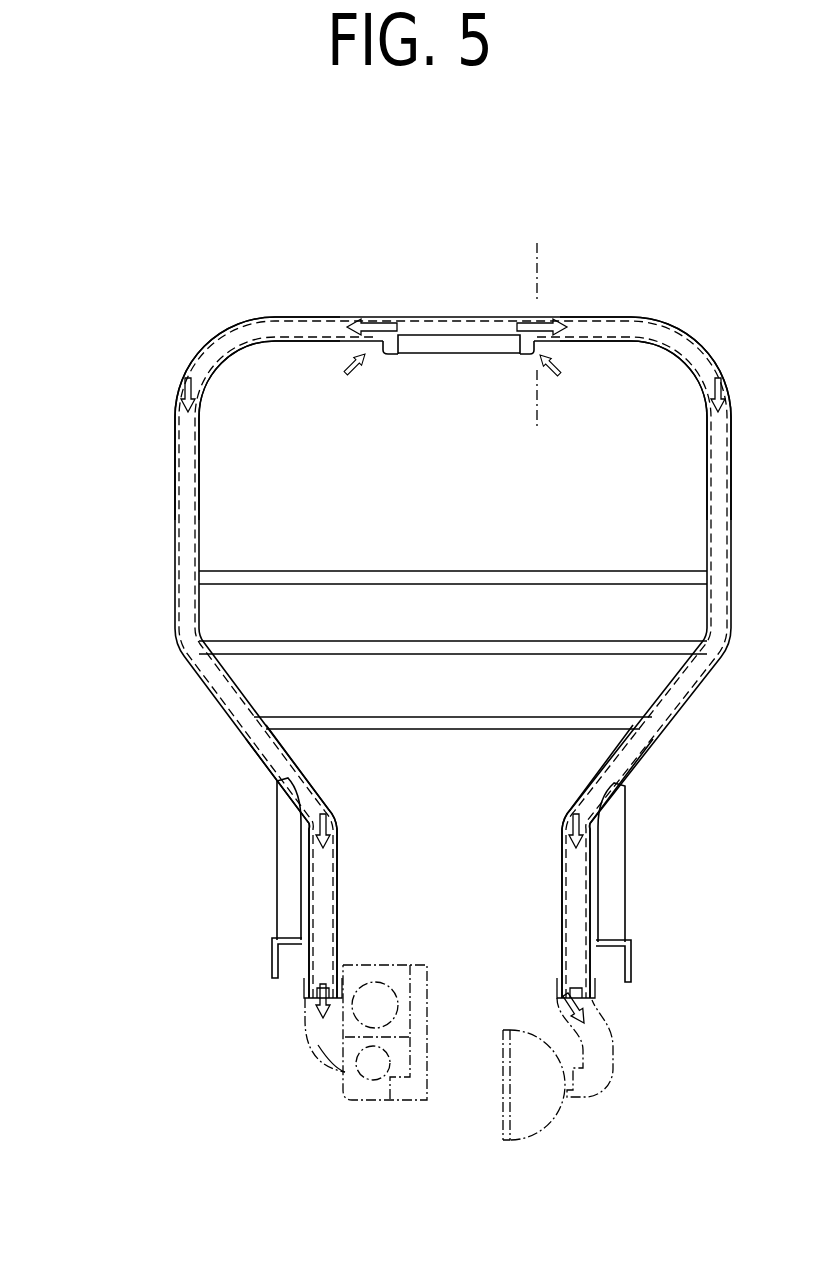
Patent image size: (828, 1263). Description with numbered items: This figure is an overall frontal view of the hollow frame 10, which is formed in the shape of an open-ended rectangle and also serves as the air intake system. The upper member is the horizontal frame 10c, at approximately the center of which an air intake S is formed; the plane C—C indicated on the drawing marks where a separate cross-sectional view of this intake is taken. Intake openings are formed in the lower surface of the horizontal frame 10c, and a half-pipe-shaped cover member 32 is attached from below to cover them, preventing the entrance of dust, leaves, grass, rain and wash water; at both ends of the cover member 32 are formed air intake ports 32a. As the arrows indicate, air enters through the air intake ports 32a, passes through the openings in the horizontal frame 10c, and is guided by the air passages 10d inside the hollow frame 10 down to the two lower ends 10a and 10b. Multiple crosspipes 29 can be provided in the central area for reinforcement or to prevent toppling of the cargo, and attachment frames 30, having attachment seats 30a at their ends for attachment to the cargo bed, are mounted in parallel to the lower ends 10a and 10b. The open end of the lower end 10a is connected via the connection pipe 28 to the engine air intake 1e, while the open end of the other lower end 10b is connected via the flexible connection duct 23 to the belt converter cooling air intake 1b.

The hollow frame 10 is at (432, 318).
The lower end of the hollow frame 10a is at (321, 812).
The lower end of the hollow frame 10b is at (577, 815).
The horizontal frame 10c is at (609, 320).
The air passages 10d is at (272, 330).
The flexible connection duct 23 is at (591, 1068).
The connection pipe 28 is at (326, 1036).
The crosspipes 29 is at (452, 723).
The attachment frames 30 is at (290, 829).
The attachment seats 30a is at (272, 958).
The cover member 32 is at (418, 356).
The air intake ports 32a is at (391, 357).
The air intake S is at (459, 365).
The plane C— C is at (540, 410).
The air intake for the engine 1e is at (316, 1087).
The air intake for the cooling of the belt converter 1b is at (566, 1120).